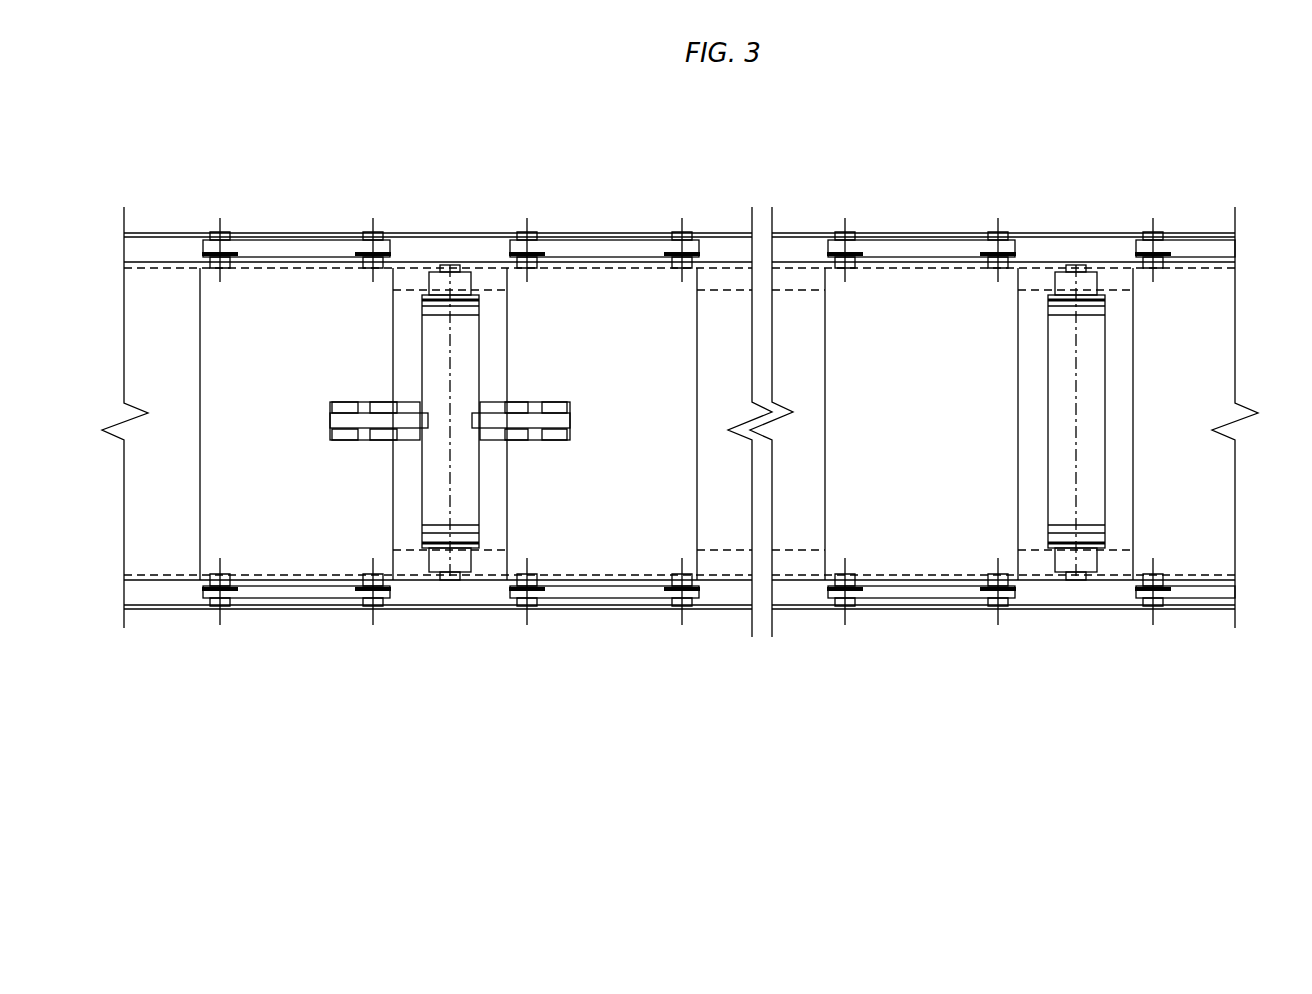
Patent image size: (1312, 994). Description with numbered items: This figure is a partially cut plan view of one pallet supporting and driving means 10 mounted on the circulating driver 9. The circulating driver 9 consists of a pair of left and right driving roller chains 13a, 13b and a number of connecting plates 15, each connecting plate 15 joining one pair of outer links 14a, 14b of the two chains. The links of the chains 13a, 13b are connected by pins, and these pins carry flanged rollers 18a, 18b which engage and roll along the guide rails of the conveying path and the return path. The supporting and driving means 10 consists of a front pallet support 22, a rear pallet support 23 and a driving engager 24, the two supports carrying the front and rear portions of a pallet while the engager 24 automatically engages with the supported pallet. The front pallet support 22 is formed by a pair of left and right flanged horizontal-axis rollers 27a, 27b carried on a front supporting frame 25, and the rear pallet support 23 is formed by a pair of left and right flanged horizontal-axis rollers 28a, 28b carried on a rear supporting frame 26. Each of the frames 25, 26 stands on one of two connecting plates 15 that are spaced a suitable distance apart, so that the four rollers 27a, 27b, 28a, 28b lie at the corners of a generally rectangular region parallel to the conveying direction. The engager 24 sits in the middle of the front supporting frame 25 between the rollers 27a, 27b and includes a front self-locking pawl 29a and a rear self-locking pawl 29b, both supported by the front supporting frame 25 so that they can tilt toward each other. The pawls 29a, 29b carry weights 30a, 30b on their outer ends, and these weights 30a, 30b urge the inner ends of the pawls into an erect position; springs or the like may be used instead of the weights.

The circulating driver 9 is at (290, 234).
The supporting and driving means 10 is at (377, 531).
The driving roller chain 13a is at (893, 604).
The driving roller chain 13b is at (889, 234).
The outer link 14a is at (413, 584).
The outer link 14b is at (476, 264).
The connecting plate 15 is at (401, 343).
The flanged roller 18a is at (207, 590).
The flanged roller 18b is at (210, 244).
The front pallet support 22 is at (480, 282).
The rear pallet support 23 is at (1082, 582).
The driving engager 24 is at (378, 446).
The front supporting frame 25 is at (462, 347).
The rear supporting frame 26 is at (1060, 425).
The flanged horizontal-axis roller 27a is at (466, 580).
The flanged horizontal-axis roller 27b is at (432, 272).
The flanged horizontal-axis roller 28a is at (1063, 560).
The flanged horizontal-axis roller 28b is at (1060, 275).
The front self-locking pawl 29a is at (408, 422).
The rear self-locking pawl 29b is at (490, 420).
The weight 30a is at (343, 440).
The weight 30b is at (560, 437).